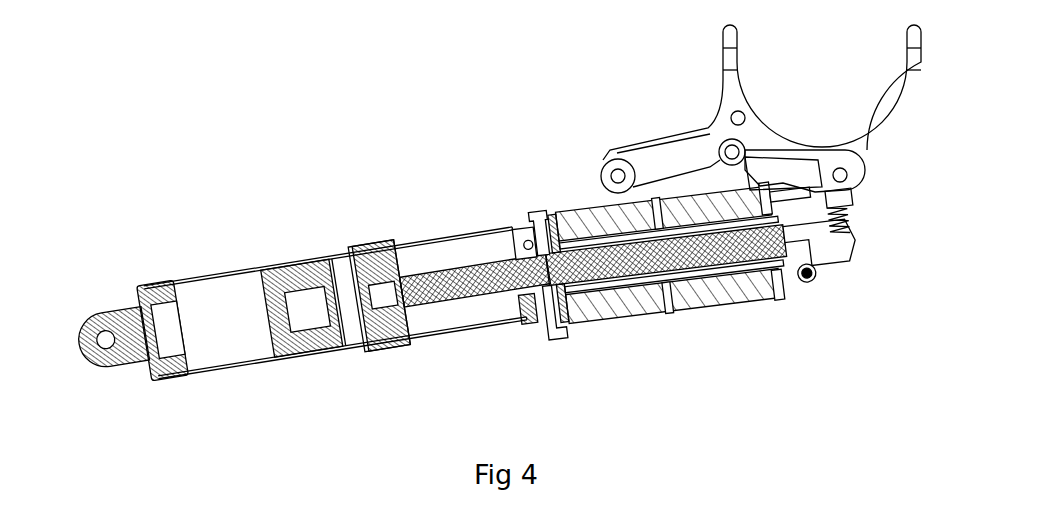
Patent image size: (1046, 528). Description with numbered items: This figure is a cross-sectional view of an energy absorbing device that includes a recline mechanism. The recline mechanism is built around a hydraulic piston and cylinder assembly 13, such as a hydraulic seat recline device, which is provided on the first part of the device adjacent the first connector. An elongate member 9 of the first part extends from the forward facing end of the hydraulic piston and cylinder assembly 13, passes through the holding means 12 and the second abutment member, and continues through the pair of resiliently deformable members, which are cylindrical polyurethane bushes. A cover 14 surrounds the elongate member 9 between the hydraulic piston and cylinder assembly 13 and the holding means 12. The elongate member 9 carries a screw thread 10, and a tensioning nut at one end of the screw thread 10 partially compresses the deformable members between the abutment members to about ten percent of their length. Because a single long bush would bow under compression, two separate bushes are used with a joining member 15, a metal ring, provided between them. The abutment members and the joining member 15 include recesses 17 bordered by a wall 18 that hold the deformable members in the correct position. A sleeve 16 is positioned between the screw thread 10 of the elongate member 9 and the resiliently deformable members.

The elongate member 9 is at (463, 283).
The screw thread 10 is at (743, 245).
The holding means 12 is at (560, 342).
The hydraulic piston and cylinder assembly 13 is at (256, 268).
The cover 14 is at (408, 242).
The joining member 15 is at (670, 313).
The sleeve 16 is at (610, 300).
The recesses 17 is at (556, 230).
The wall 18 is at (562, 214).